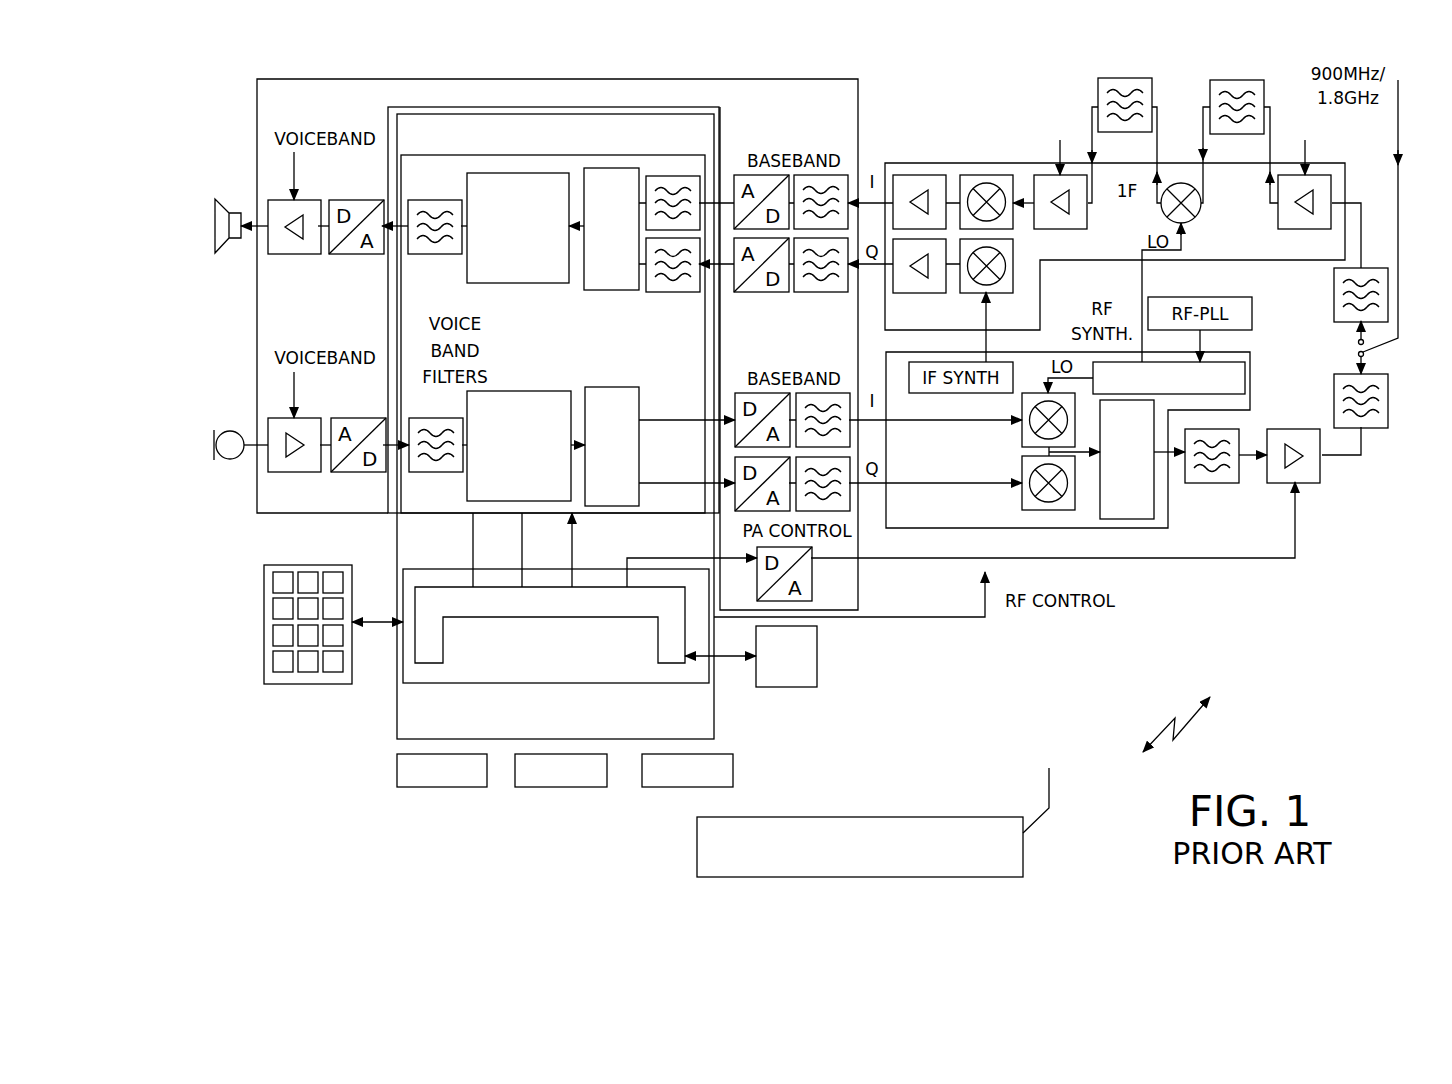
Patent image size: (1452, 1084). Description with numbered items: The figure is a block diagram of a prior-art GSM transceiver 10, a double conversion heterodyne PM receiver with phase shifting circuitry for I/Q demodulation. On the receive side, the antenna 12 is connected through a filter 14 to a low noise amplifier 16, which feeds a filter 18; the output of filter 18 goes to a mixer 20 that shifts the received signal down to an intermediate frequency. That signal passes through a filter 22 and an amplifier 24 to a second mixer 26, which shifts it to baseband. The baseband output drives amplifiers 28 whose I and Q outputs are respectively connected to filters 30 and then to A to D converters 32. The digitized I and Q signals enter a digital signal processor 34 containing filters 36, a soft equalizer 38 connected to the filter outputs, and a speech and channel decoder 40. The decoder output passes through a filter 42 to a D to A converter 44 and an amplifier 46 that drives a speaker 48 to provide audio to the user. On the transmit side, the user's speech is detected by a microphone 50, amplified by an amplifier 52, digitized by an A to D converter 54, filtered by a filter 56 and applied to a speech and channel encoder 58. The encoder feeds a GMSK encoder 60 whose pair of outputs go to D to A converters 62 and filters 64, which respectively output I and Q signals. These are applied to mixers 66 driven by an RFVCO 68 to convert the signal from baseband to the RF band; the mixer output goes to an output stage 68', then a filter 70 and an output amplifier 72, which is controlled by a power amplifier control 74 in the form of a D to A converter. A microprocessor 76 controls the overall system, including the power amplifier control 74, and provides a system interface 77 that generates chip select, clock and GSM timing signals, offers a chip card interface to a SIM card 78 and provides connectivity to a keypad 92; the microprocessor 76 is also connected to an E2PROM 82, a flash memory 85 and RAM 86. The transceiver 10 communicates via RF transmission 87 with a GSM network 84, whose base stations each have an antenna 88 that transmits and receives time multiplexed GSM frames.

The GSM transceiver 10 is at (606, 58).
The antenna 12 is at (1400, 207).
The filter 14 is at (1388, 322).
The low noise amplifier 16 is at (1325, 176).
The filter 18 is at (1211, 96).
The mixer 20 is at (1180, 183).
The filter 22 is at (1098, 96).
The amplifier 24 is at (1045, 175).
The mixer 26 is at (990, 175).
The amplifiers 28 is at (933, 175).
The filters 30 is at (850, 178).
The A to D converters 32 is at (733, 180).
The digital signal processor 34 is at (495, 113).
The filters 36 is at (672, 291).
The soft equalizer 38 is at (612, 291).
The speech and channel decoder 40 is at (520, 283).
The filter 42 is at (423, 200).
The D to A converter 44 is at (355, 253).
The amplifier 46 is at (280, 253).
The speaker 48 is at (224, 199).
The microphone 50 is at (232, 431).
The amplifier 52 is at (290, 472).
The A to D converter 54 is at (360, 472).
The filter 56 is at (435, 472).
The speech and channel encoder 58 is at (535, 391).
The GMSK encoder 60 is at (625, 387).
The D to A converters 62 is at (733, 405).
The filters 64 is at (849, 505).
The mixers 66 is at (1022, 490).
The RFVCO 68 is at (1198, 356).
The output stage 68' is at (1161, 473).
The filter 70 is at (1225, 483).
The output amplifier 72 is at (1322, 468).
The power amplifier control 74 is at (811, 582).
The microprocessor 76 is at (397, 700).
The system interface 77 is at (620, 618).
The SIM card 78 is at (817, 680).
The E2PROM 82 is at (478, 787).
The GSM network 84 is at (697, 845).
The flash memory 85 is at (555, 787).
The RAM 86 is at (655, 787).
The RF transmission 87 is at (1158, 735).
The antenna 88 is at (1040, 822).
The keypad 92 is at (300, 684).